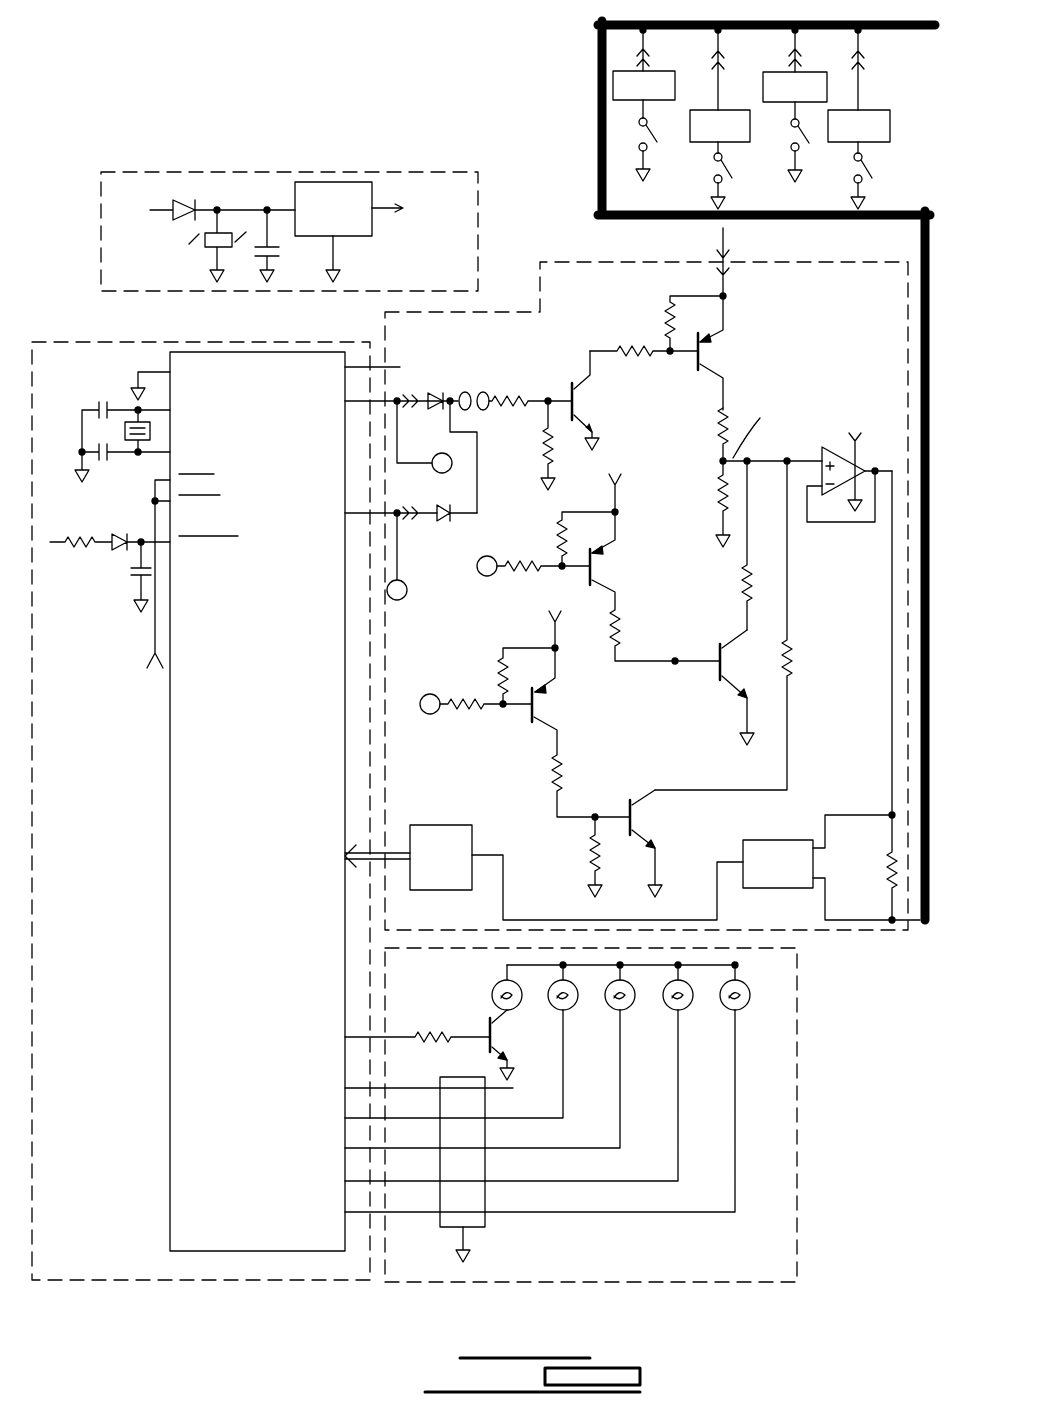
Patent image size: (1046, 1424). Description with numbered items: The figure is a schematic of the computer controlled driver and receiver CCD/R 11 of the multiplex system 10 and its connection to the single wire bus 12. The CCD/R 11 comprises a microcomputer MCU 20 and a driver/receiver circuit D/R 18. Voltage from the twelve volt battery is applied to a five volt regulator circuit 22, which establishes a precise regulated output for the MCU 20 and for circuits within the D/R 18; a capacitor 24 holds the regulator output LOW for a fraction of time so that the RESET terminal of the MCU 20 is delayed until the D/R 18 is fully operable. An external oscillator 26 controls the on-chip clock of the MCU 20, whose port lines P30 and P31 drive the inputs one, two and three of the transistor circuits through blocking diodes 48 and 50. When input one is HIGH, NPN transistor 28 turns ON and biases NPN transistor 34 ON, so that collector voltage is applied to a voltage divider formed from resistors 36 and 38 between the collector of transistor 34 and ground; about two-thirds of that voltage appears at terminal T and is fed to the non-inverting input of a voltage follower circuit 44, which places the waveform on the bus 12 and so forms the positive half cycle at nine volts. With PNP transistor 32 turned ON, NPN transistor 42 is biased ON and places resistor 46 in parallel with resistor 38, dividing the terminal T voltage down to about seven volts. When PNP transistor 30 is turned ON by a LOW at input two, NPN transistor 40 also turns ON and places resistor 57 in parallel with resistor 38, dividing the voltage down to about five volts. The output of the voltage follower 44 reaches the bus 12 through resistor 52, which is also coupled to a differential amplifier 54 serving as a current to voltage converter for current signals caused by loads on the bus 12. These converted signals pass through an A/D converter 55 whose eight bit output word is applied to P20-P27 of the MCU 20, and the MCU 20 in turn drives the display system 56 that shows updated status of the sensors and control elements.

The smart control element and smart sensor multiplex system 10 is at (552, 30).
The computer controlled driver and receiver (CCD/R) 11 is at (577, 285).
The bus 12 is at (888, 211).
The driver/receiver (D/R) circuit 18 is at (838, 263).
The microcomputer (MCU) 20 is at (258, 350).
The 5-volt regulator circuit 22 is at (440, 168).
The capacitor 24 is at (133, 569).
The external oscillator 26 is at (124, 456).
The NPN transistor 28 is at (576, 389).
The PNP transistor 30 is at (598, 560).
The PNP transistor 32 is at (537, 701).
The NPN transistor 34 is at (708, 345).
The resistor 36 is at (720, 413).
The resistor 38 is at (720, 500).
The NPN transistor 40 is at (718, 650).
The NPN transistor 42 is at (636, 810).
The voltage follower circuit 44 is at (838, 490).
The resistor 46 is at (790, 655).
The blocking diode 48 is at (441, 393).
The blocking diode 50 is at (447, 523).
The resistor 52 is at (888, 866).
The differential amplifier 54 is at (777, 840).
The A/D converter 55 is at (428, 836).
The display system 56 is at (800, 985).
The resistor 57 is at (745, 578).